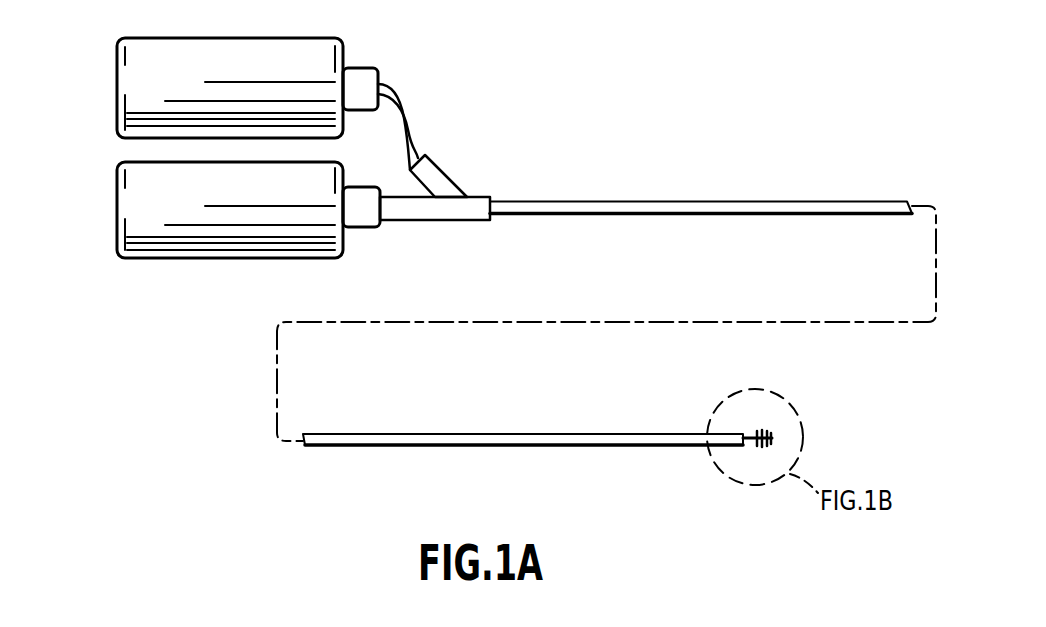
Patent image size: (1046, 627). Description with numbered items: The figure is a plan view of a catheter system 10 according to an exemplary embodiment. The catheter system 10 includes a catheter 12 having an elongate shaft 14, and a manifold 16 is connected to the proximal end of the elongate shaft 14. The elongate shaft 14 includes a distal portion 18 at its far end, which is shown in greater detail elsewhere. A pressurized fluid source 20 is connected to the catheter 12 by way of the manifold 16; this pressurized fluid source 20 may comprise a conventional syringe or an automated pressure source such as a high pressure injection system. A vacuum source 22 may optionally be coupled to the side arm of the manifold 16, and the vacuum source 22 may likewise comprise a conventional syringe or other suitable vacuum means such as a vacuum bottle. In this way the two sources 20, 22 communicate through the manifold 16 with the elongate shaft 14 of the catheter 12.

The catheter system 10 is at (775, 96).
The catheter 12 is at (676, 146).
The elongate shaft 14 is at (803, 189).
The manifold 16 is at (476, 171).
The distal portion 18 is at (769, 410).
The pressurized fluid source 20 is at (105, 195).
The vacuum source 22 is at (105, 73).